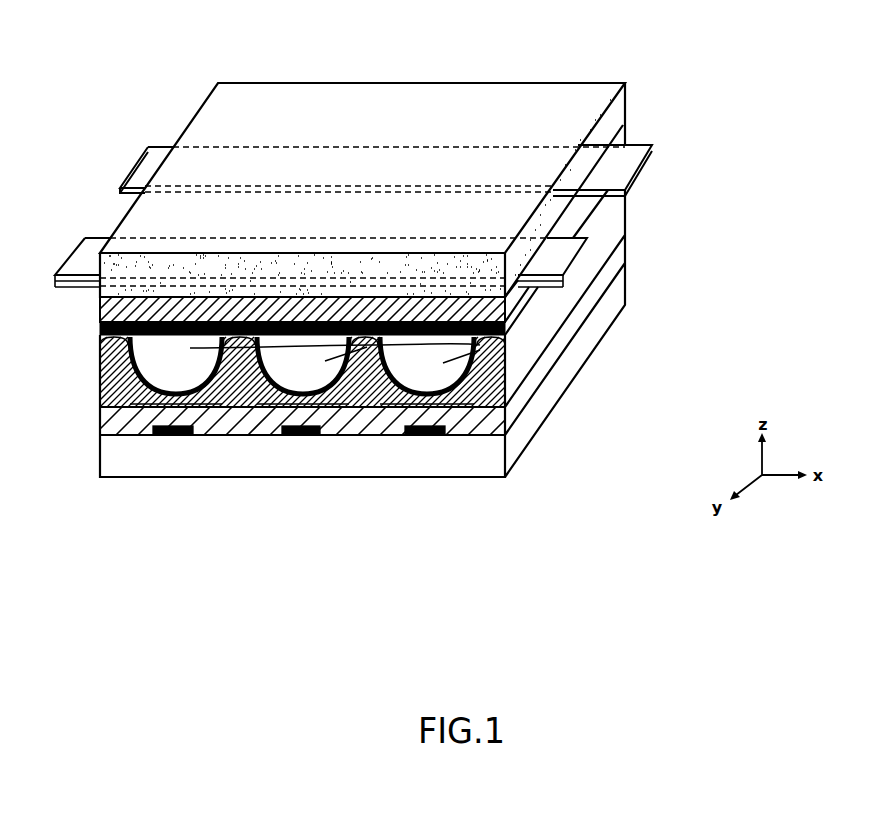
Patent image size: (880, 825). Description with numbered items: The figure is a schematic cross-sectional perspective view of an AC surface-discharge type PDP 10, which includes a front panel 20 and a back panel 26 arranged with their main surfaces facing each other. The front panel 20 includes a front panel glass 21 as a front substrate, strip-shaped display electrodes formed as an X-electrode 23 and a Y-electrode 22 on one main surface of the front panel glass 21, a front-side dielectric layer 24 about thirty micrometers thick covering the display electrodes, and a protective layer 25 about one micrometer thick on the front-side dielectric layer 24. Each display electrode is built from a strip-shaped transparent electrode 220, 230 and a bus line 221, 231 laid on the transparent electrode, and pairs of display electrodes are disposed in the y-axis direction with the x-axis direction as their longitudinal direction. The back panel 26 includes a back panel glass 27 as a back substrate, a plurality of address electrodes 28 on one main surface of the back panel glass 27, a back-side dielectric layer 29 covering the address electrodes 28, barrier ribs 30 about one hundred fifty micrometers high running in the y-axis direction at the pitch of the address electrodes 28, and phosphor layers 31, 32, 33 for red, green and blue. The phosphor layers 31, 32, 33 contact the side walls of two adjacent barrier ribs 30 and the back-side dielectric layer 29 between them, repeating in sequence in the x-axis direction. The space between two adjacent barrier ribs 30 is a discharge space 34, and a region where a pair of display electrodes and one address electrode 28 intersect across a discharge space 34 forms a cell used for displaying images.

The PDP 10 is at (412, 66).
The front panel 20 is at (152, 113).
The front panel glass 21 is at (628, 100).
The Y-electrode 22 is at (688, 231).
The transparent electrode 220 is at (563, 247).
The bus line 221 is at (587, 277).
The X-electrode 23 is at (720, 135).
The transparent electrode 230 is at (652, 145).
The bus line 231 is at (650, 166).
The front-side dielectric layer 24 is at (98, 305).
The protective layer 25 is at (98, 327).
The back panel 26 is at (570, 440).
The back panel glass 27 is at (100, 450).
The address electrodes 28 is at (420, 435).
The back-side dielectric layer 29 is at (98, 412).
The barrier ribs 30 is at (98, 362).
The phosphor layer 31 is at (148, 408).
The phosphor layer 32 is at (367, 407).
The phosphor layer 33 is at (507, 404).
The discharge space 34 is at (480, 345).